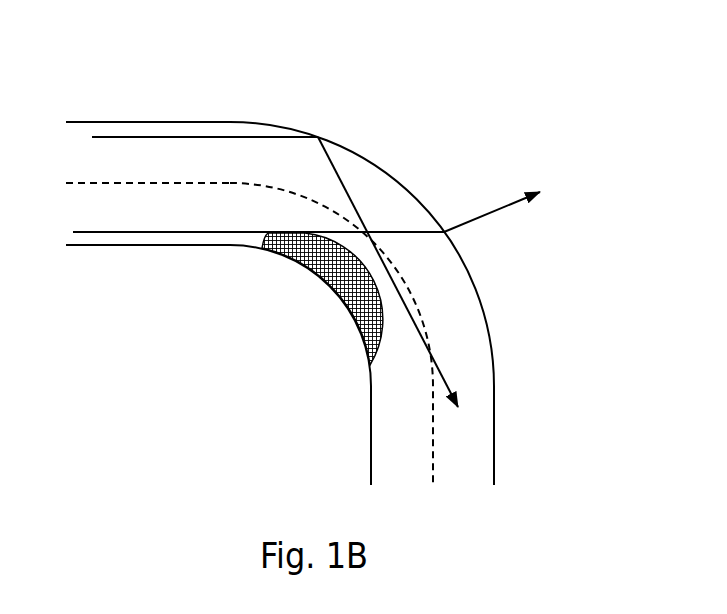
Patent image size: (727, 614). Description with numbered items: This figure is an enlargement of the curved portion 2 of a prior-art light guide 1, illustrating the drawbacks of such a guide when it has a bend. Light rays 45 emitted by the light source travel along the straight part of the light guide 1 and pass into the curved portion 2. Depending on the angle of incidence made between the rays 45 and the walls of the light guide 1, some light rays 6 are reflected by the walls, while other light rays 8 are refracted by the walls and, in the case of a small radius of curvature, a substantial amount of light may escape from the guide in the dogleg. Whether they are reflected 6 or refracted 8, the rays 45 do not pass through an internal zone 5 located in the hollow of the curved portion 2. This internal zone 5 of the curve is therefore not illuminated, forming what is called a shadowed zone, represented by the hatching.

The light guide 1 is at (280, 245).
The curved portion 2 is at (385, 152).
The light rays 45 is at (248, 137).
The internal zone 5 is at (330, 310).
The reflected light rays 6 is at (440, 365).
The refracted light rays 8 is at (497, 207).